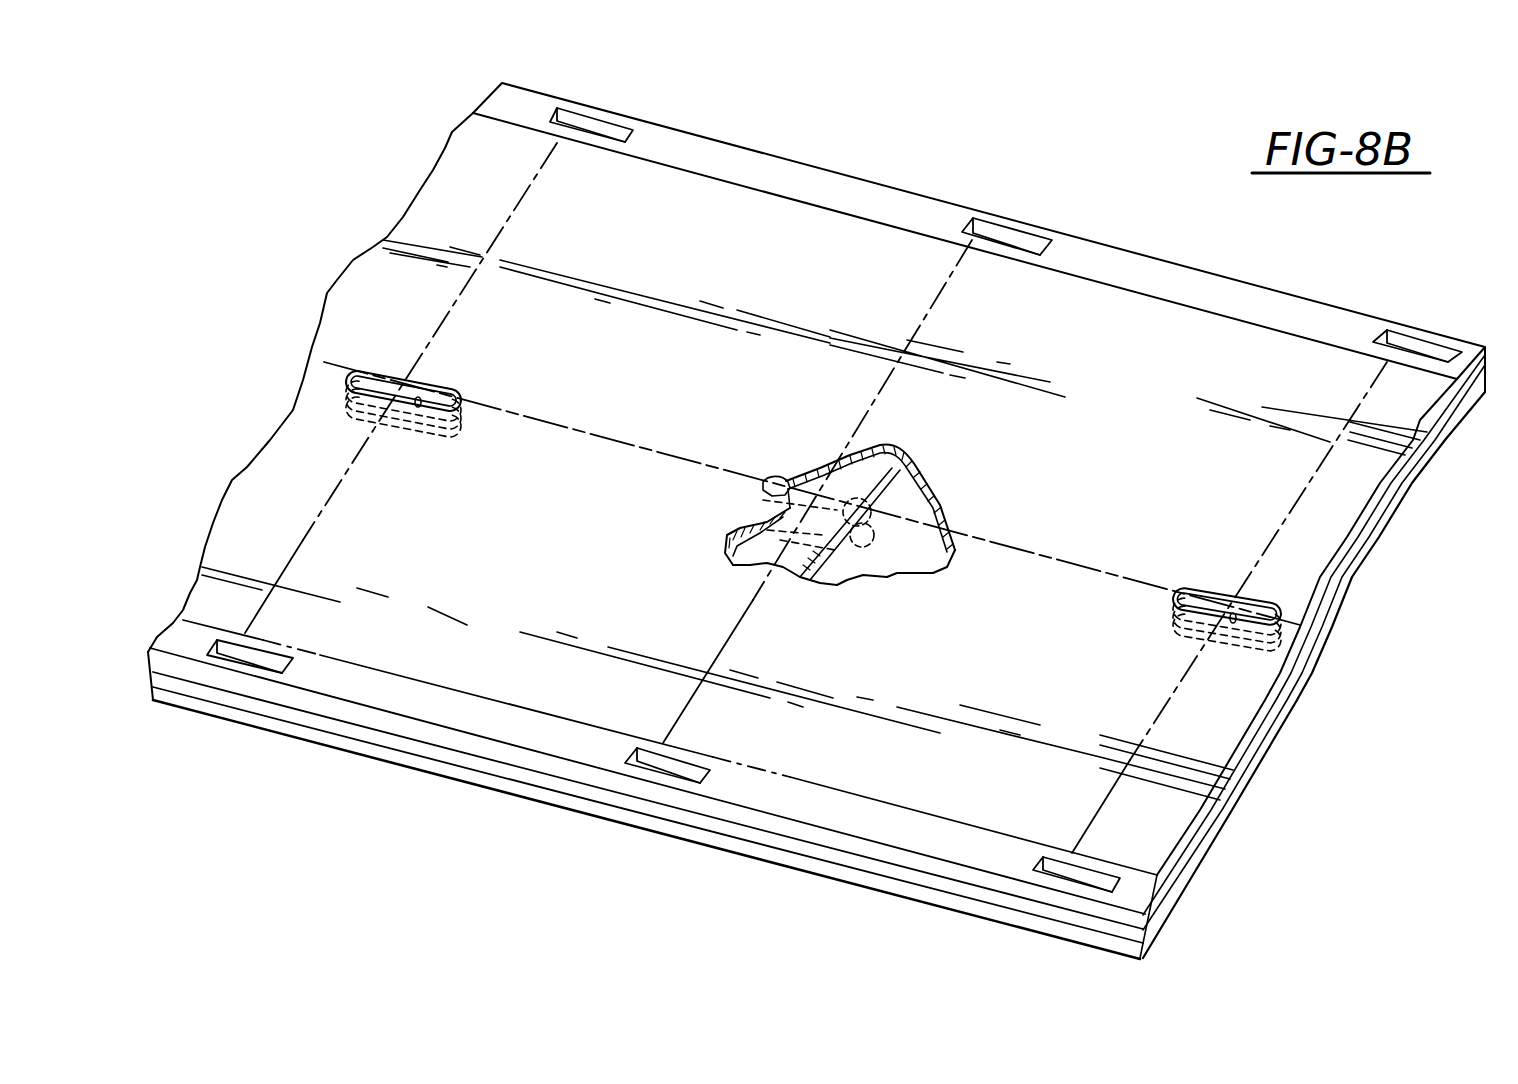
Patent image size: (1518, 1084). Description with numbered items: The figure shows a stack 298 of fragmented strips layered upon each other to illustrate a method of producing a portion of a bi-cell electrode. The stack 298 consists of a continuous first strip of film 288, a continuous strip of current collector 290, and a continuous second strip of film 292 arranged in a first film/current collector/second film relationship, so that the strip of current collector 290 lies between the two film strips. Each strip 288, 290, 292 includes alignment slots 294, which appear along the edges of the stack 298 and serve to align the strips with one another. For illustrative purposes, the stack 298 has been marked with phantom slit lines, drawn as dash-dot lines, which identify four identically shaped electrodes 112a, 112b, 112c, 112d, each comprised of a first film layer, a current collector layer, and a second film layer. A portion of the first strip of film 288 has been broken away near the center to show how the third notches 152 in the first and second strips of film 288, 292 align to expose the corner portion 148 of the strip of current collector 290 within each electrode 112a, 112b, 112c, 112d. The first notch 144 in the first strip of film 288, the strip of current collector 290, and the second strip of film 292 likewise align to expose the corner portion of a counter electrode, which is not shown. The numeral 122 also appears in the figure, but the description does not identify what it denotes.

The stack 298 is at (1044, 180).
The alignment slots 294 is at (612, 131).
The first notch 144 is at (433, 392).
The electrode 112a is at (966, 688).
The electrode 112b is at (1135, 420).
The electrode 112c is at (685, 350).
The electrode 112d is at (533, 585).
The fold line 122 is at (634, 447).
The third notches 152 is at (793, 475).
The corner portion 148 is at (903, 508).
The first strip of film 288 is at (1127, 916).
The strip of current collector 290 is at (1163, 928).
The second strip of film 292 is at (1147, 952).